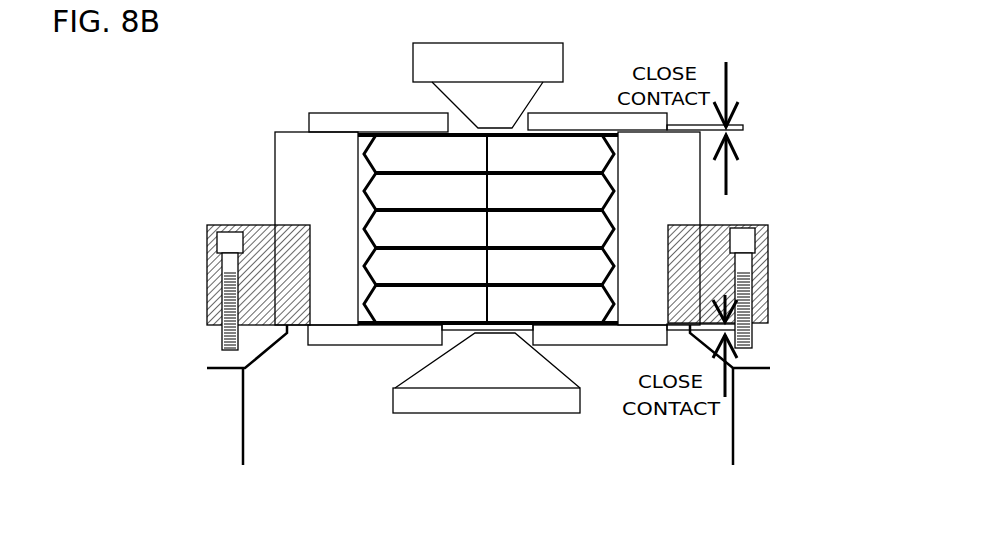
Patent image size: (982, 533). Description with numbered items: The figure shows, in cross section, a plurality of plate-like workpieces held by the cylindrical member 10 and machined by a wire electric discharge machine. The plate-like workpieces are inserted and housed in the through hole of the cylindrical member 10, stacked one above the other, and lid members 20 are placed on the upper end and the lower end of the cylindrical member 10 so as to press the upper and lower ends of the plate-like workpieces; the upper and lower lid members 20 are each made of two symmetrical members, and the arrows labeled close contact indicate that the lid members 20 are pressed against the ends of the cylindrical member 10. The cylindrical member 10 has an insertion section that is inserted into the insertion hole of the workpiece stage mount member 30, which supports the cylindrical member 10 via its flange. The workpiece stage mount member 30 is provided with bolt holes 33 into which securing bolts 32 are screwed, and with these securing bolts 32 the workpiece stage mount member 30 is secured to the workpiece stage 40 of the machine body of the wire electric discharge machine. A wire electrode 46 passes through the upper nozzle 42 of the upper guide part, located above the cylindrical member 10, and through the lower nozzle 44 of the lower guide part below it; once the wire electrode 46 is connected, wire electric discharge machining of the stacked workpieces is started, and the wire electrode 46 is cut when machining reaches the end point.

The cylindrical member 10 is at (300, 130).
The lid member 20 is at (580, 113).
The workpiece stage mount member 30 is at (715, 225).
The securing bolt 32 is at (750, 222).
The bolt hole 33 is at (767, 322).
The workpiece stage 40 is at (767, 417).
The upper nozzle 42 is at (563, 50).
The lower nozzle 44 is at (565, 415).
The wire electrode 46 is at (487, 192).